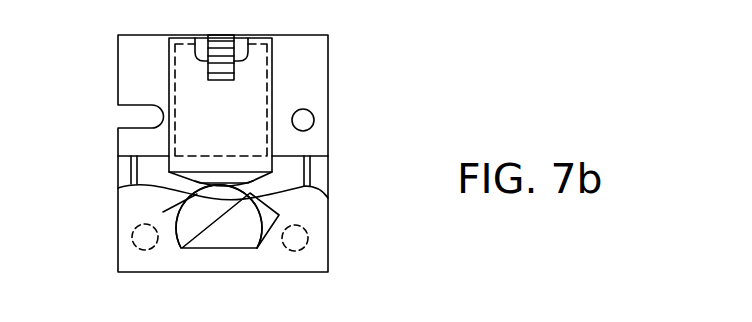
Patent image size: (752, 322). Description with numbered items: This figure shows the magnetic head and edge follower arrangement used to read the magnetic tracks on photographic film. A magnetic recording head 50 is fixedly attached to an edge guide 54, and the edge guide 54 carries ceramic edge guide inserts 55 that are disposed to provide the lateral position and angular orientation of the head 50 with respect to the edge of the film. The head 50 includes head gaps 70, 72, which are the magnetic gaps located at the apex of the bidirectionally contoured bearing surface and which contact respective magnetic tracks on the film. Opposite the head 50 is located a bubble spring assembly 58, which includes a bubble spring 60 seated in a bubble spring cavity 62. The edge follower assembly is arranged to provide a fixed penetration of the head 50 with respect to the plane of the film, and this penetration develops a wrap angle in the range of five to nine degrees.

The magnetic recording head 50 is at (190, 98).
The edge guide 54 is at (328, 65).
The ceramic edge guide inserts 55 is at (320, 173).
The bubble spring assembly 58 is at (118, 243).
The bubble spring 60 is at (195, 190).
The bubble spring cavity 62 is at (163, 212).
The head gap 70 is at (220, 187).
The head gap 72 is at (219, 216).